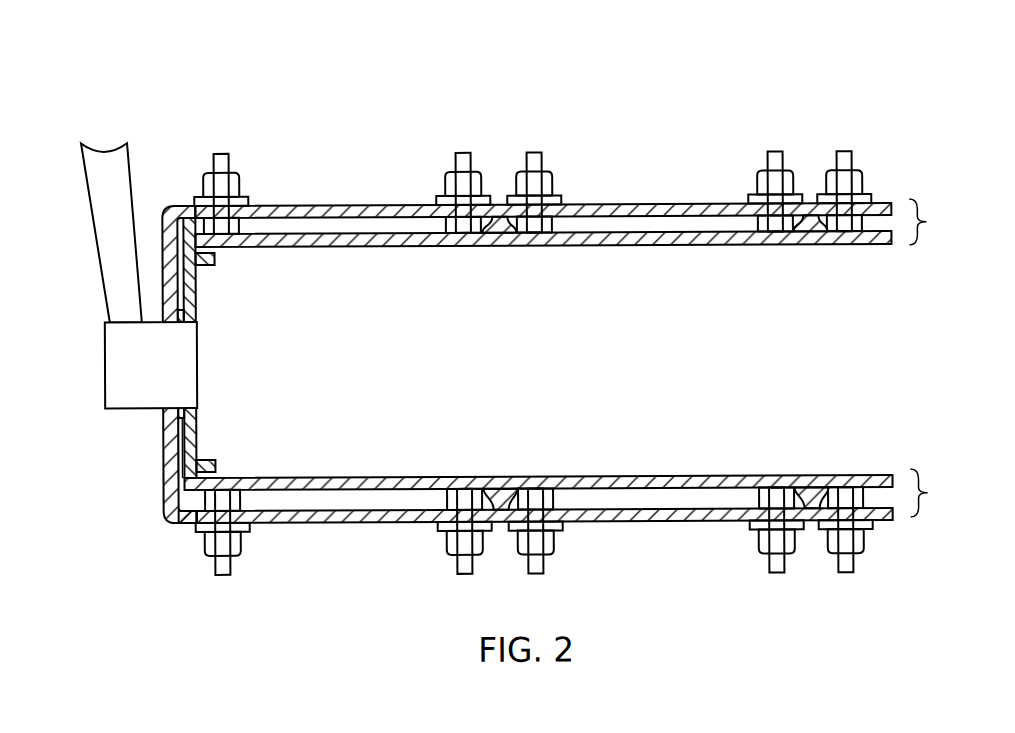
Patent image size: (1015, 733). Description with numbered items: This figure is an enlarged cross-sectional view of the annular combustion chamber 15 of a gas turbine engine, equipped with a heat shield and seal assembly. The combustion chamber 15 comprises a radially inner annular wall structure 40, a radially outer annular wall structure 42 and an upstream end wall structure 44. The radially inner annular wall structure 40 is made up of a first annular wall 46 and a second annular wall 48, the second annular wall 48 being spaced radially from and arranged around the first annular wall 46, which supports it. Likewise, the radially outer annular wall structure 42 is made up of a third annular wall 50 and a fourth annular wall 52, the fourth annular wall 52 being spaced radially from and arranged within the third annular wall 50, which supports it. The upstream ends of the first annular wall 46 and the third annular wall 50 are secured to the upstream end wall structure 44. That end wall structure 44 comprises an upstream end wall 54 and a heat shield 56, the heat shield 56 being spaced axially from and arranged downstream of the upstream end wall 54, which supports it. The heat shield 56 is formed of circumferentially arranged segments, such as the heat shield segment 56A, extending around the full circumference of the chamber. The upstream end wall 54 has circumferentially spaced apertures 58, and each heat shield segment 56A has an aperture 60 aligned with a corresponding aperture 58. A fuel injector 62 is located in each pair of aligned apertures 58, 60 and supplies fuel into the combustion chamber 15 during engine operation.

The combustion chamber 15 is at (713, 115).
The radially inner annular wall structure 40 is at (927, 496).
The radially outer annular wall structure 42 is at (927, 225).
The upstream end wall structure 44 is at (170, 462).
The first annular wall 46 is at (722, 523).
The second annular wall 48 is at (735, 478).
The third annular wall 50 is at (727, 205).
The fourth annular wall 52 is at (738, 247).
The upstream end wall 54 is at (168, 490).
The heat shield 56 is at (198, 445).
The heat shield segment 56A is at (200, 284).
The aperture 58 is at (184, 404).
The aperture 60 is at (184, 326).
The fuel injector 62 is at (116, 372).